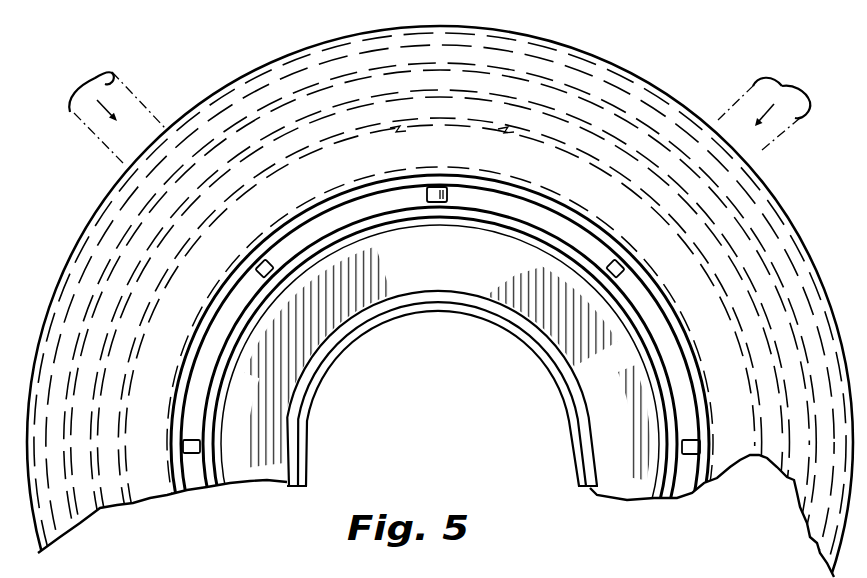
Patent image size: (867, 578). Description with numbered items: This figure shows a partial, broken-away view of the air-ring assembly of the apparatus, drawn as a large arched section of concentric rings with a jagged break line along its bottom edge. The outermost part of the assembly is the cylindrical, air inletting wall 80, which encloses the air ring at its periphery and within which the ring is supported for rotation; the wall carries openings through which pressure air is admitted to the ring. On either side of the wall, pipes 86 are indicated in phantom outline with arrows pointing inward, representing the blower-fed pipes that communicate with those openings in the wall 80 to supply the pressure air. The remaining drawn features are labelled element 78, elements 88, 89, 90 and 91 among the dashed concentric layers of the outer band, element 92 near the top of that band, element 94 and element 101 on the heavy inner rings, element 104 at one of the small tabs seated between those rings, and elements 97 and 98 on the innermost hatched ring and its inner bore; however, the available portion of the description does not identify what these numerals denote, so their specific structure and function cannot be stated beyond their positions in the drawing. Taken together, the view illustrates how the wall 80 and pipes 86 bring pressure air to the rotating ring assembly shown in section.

The annular body 78 is at (440, 302).
The air inletting wall 80 is at (440, 305).
The pipes 86 is at (152, 112).
The intermediate layer 88 is at (440, 320).
The layer 89 is at (440, 334).
The layer 90 is at (439, 348).
The inner layer 91 is at (399, 372).
The layer 92 is at (452, 145).
The outer ring 94 is at (440, 367).
The inner ring 97 is at (442, 388).
The ring 98 is at (440, 401).
The band 101 is at (440, 379).
The tab 104 is at (441, 320).